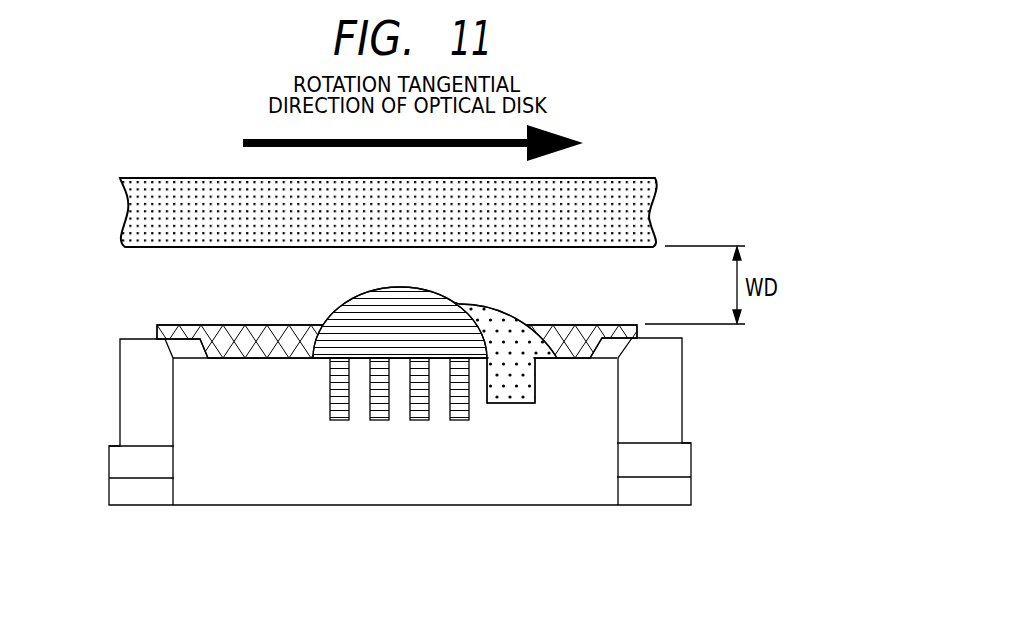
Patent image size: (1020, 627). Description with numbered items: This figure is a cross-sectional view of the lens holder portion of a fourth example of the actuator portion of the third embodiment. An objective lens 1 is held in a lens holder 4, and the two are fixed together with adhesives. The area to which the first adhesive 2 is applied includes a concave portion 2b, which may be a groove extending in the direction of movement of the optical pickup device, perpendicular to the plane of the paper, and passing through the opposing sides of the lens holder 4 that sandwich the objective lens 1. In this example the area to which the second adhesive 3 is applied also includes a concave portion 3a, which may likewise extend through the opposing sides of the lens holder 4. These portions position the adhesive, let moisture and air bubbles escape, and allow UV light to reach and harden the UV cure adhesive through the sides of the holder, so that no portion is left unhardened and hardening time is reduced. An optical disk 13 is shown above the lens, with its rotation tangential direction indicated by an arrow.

The objective lens 1 is at (203, 328).
The objective lens 2 is at (276, 424).
The concave portion 2b is at (418, 420).
The solid immersion lens 3 is at (517, 417).
The concave portion 3a is at (510, 403).
The lens holder 4 is at (655, 395).
The optical disk 13 is at (637, 207).